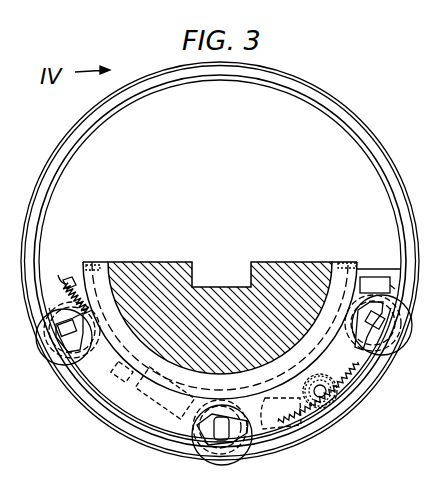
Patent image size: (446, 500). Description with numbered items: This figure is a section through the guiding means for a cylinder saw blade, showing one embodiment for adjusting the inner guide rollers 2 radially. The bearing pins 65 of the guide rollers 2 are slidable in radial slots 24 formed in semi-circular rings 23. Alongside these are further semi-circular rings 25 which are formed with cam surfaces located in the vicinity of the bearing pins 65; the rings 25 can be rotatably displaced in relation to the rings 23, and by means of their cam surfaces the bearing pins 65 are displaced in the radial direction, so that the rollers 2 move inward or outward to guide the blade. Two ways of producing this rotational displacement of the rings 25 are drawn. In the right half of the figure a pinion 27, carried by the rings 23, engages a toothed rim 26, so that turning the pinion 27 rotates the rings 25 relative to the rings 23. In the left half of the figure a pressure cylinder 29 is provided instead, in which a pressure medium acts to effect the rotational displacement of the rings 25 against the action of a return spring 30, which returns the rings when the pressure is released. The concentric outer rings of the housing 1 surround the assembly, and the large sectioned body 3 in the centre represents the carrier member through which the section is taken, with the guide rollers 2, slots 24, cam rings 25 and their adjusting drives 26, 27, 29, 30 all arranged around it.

The housing 1 is at (349, 119).
The guide rollers 2 is at (205, 448).
The hub body 3 is at (163, 262).
The semi-circular rings 23 is at (395, 290).
The radial slots 24 is at (225, 443).
The semi-circular rings 25 is at (182, 418).
The toothed rim 26 is at (342, 386).
The pinion 27 is at (321, 404).
The pressure cylinder 29 is at (128, 423).
The return spring 30 is at (58, 273).
The bearing pins 65 is at (243, 449).